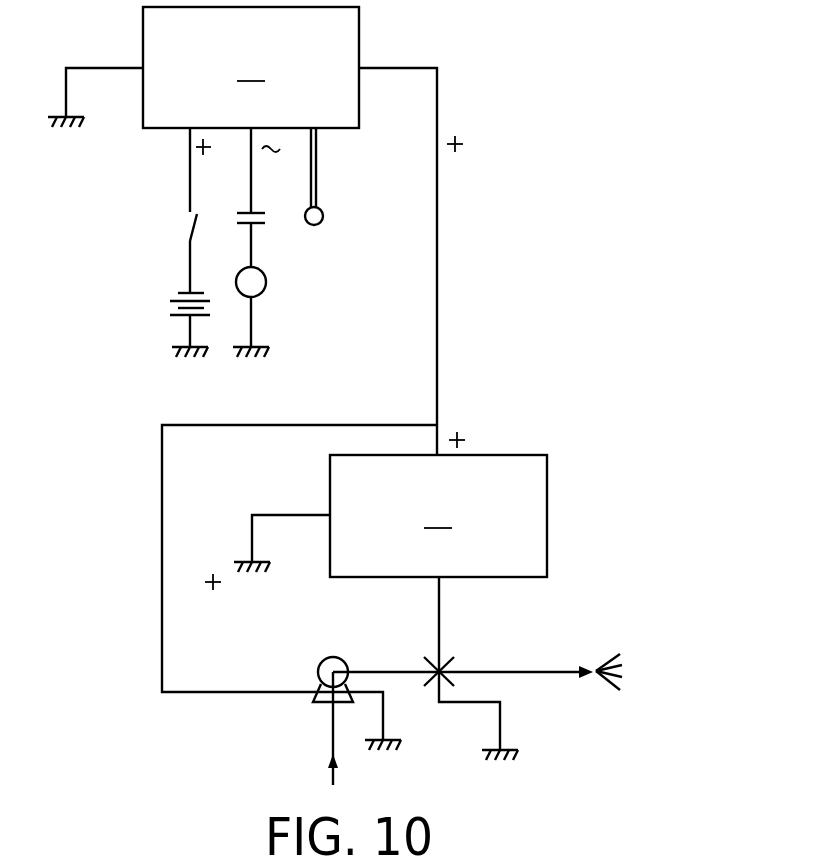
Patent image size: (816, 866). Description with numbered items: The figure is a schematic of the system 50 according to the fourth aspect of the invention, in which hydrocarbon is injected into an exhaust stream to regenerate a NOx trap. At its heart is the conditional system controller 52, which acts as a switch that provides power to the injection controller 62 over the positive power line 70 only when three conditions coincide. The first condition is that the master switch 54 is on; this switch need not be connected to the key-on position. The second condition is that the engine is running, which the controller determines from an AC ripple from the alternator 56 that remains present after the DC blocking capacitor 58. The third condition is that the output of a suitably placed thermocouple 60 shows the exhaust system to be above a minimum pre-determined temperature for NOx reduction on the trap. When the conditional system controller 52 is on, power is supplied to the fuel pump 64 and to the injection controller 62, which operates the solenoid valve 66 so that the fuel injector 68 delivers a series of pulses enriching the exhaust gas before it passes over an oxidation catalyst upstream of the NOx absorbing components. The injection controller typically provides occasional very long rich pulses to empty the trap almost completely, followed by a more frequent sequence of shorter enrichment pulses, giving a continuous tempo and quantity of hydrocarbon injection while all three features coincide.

The system 50 is at (492, 78).
The conditional system controller 52 is at (251, 67).
The master switch 54 is at (179, 238).
The alternator 56 is at (267, 282).
The blocking capacitor 58 is at (246, 224).
The thermocouple 60 is at (323, 214).
The injection controller 62 is at (438, 516).
The fuel pump 64 is at (318, 672).
The valve 66 is at (459, 663).
The fuel injector 68 is at (594, 658).
The positive power line 70 is at (437, 272).